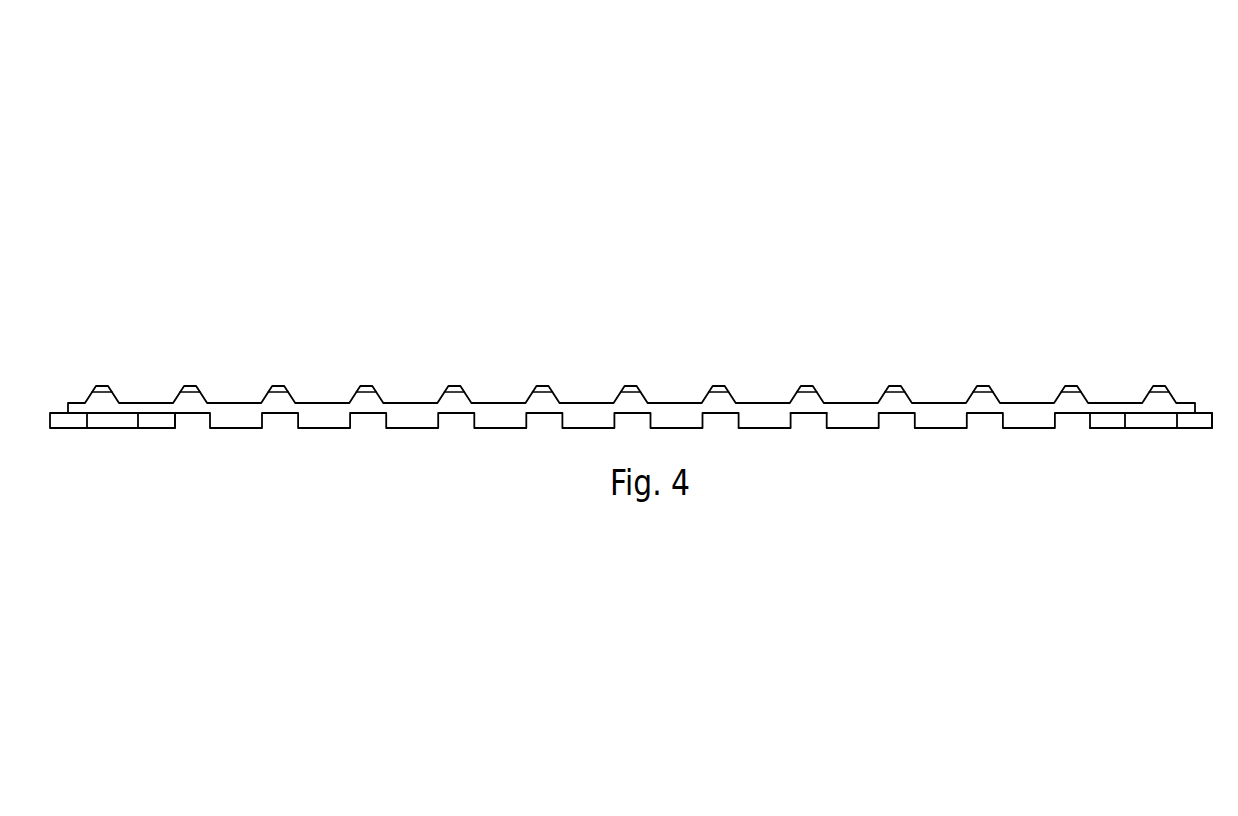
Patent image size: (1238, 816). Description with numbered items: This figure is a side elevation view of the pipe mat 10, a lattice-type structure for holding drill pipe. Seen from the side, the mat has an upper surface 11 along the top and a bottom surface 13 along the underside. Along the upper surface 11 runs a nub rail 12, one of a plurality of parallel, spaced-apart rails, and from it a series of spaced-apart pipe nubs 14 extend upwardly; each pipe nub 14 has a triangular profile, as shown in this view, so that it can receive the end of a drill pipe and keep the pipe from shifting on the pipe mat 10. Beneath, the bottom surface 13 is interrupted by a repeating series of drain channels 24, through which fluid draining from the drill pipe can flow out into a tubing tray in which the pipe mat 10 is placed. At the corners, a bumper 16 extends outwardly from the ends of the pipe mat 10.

The pipe mat 10 is at (250, 93).
The upper surface 11 is at (773, 325).
The nub rail 12 is at (412, 415).
The bottom surface 13 is at (935, 450).
The pipe nub 14 is at (542, 400).
The bumper 16 is at (103, 423).
The drain channel 24 is at (812, 423).